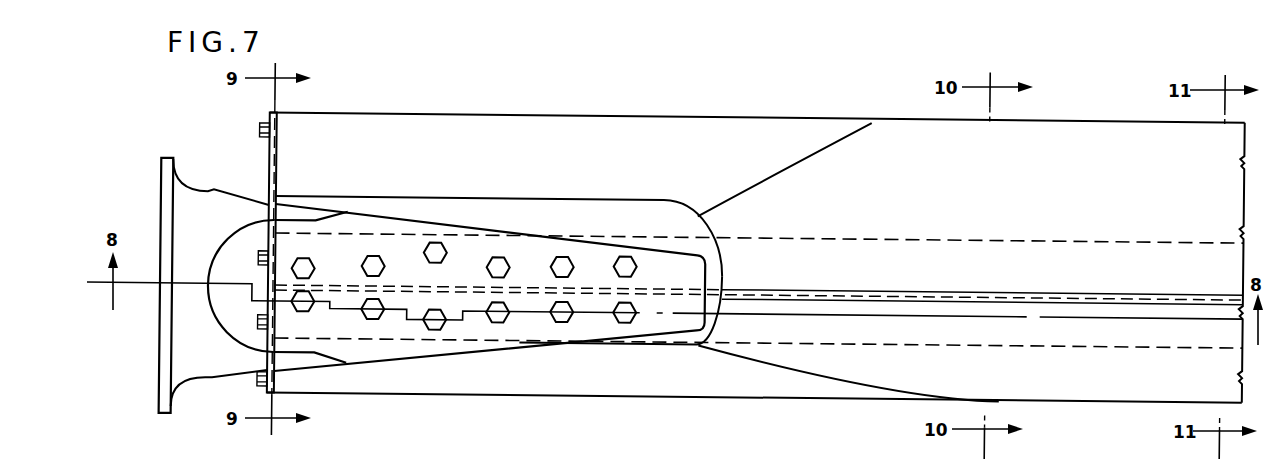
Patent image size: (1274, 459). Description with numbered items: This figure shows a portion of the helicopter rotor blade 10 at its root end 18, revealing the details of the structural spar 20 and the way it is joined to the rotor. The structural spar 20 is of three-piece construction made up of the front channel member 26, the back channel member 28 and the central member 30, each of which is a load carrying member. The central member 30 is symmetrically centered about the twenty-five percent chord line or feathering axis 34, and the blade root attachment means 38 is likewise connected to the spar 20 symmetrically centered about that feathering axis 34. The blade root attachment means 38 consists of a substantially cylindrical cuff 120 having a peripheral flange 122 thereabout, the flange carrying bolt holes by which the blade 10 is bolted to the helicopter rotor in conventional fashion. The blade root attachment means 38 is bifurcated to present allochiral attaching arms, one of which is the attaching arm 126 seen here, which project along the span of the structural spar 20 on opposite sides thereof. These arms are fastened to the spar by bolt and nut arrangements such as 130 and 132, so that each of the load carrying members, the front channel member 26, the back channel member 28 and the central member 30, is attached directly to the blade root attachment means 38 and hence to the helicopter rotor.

The helicopter rotor blade 10 is at (681, 97).
The root end 18 is at (287, 145).
The structural spar 20 is at (1073, 133).
The front channel member 26 is at (726, 128).
The back channel member 28 is at (784, 369).
The central member 30 is at (903, 295).
The feathering axis 34 is at (1075, 298).
The blade root attachment means 38 is at (180, 198).
The cylindrical cuff 120 is at (198, 363).
The peripheral flange 122 is at (170, 160).
The attaching arm 126 is at (348, 222).
The bolt and nut arrangement 130 is at (379, 265).
The bolt and nut arrangement 132 is at (436, 251).